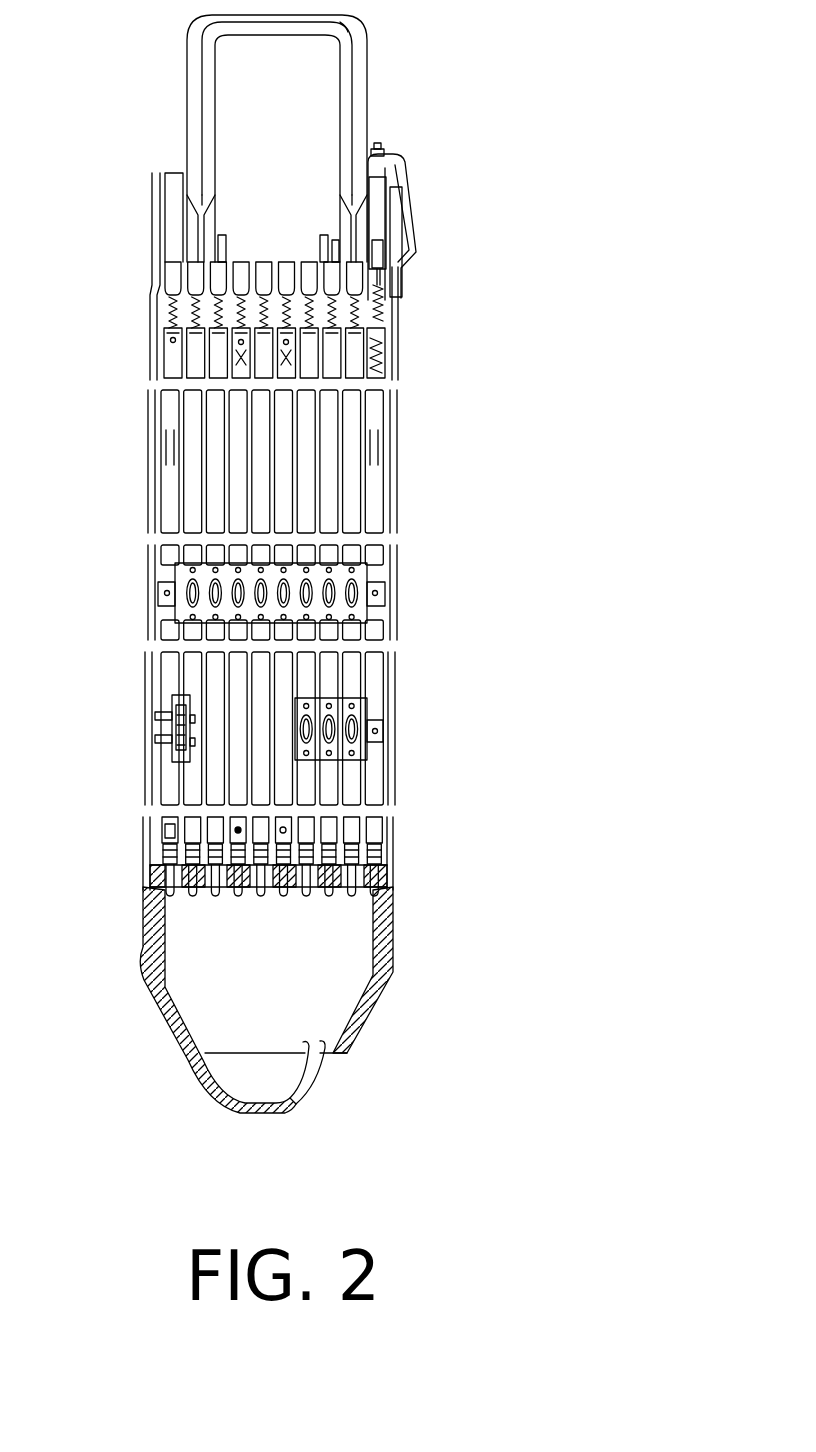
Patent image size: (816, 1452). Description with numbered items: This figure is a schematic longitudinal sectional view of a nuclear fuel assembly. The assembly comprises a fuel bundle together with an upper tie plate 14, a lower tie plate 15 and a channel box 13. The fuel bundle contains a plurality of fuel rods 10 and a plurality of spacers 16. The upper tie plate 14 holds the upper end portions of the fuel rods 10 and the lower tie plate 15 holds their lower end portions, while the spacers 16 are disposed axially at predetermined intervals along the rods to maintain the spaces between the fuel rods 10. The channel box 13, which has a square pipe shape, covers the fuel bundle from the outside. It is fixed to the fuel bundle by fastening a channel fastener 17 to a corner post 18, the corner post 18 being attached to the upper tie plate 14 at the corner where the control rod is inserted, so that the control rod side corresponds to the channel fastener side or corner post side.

The fuel rods 10 is at (238, 422).
The channel box 13 is at (399, 343).
The upper tie plate 14 is at (155, 278).
The lower tie plate 15 is at (380, 990).
The spacers 16 is at (372, 593).
The channel fastener 17 is at (403, 180).
The corner post 18 is at (380, 231).